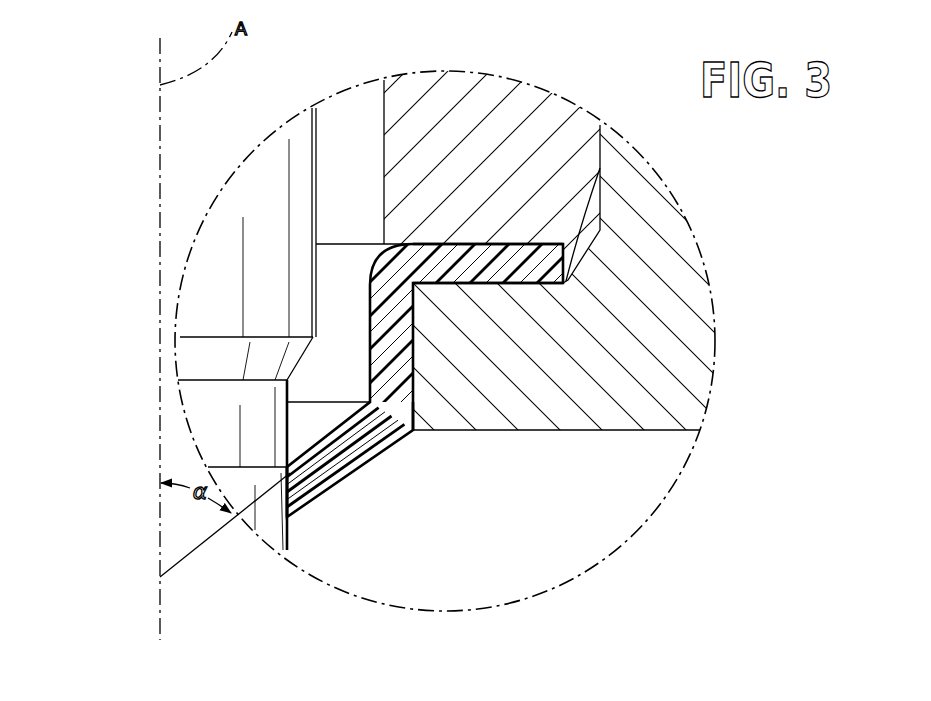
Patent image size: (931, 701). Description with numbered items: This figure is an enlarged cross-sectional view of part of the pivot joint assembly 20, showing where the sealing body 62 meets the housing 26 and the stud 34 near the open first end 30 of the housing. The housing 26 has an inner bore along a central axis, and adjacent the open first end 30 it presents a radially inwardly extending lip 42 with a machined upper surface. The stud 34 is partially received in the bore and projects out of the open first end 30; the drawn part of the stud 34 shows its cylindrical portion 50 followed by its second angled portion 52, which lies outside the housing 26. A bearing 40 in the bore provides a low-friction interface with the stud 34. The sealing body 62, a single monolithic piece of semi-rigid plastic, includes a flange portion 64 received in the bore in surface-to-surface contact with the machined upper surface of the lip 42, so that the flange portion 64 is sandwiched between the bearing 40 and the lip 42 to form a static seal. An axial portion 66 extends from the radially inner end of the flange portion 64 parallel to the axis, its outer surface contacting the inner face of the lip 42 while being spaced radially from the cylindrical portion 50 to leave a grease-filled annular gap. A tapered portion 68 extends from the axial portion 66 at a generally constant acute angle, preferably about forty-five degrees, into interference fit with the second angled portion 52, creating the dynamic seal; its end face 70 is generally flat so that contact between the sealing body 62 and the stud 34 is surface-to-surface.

The pivot joint assembly 20 is at (422, 515).
The housing 26 is at (718, 261).
The open first end 30 is at (587, 430).
The stud 34 is at (131, 232).
The bearing 40 is at (478, 110).
The lip 42 is at (522, 372).
The cylindrical portion 50 is at (265, 240).
The second angled portion 52 is at (238, 487).
The sealing body 62 is at (338, 498).
The flange portion 64 is at (522, 258).
The axial portion 66 is at (386, 360).
The tapered portion 68 is at (382, 427).
The end face 70 is at (287, 508).